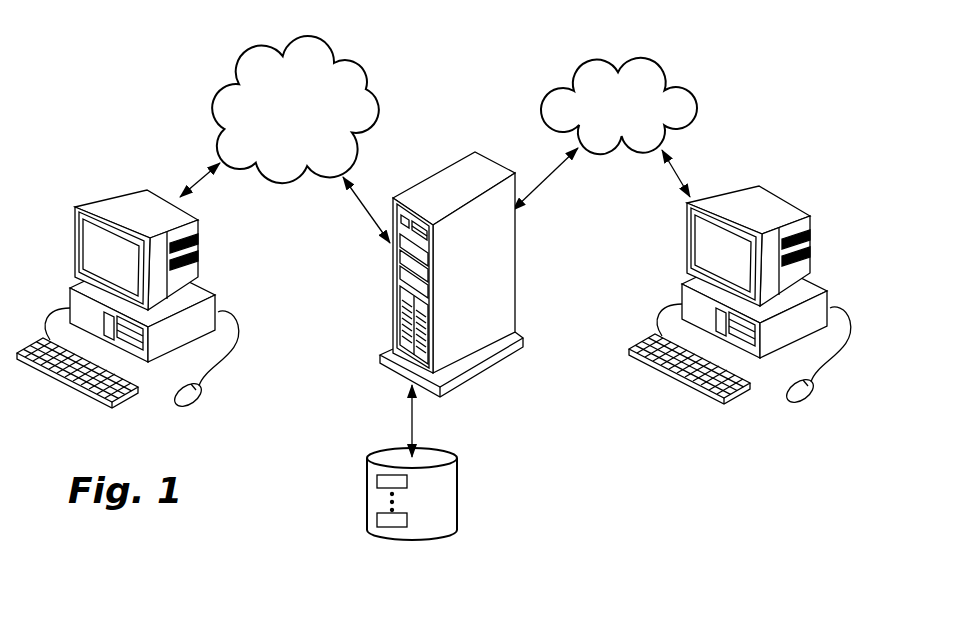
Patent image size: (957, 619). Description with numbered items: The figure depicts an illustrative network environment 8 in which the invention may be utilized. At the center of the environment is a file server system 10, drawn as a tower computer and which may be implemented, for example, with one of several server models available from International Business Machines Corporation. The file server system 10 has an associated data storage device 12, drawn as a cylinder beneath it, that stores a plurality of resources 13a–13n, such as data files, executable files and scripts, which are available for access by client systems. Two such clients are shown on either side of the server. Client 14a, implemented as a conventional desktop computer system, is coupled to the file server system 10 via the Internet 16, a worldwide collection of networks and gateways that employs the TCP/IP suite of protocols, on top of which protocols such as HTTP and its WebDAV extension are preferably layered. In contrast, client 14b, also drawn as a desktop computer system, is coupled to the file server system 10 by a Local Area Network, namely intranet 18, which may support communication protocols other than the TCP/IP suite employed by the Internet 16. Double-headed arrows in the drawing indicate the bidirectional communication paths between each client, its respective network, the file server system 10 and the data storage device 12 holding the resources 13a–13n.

The network environment 8 is at (124, 74).
The client 14a is at (95, 184).
The client 14b is at (772, 155).
The Internet 16 is at (277, 145).
The intranet 18 is at (605, 134).
The file server system 10 is at (515, 243).
The data storage device 12 is at (458, 490).
The resource 13a is at (375, 480).
The resource 13n is at (375, 518).